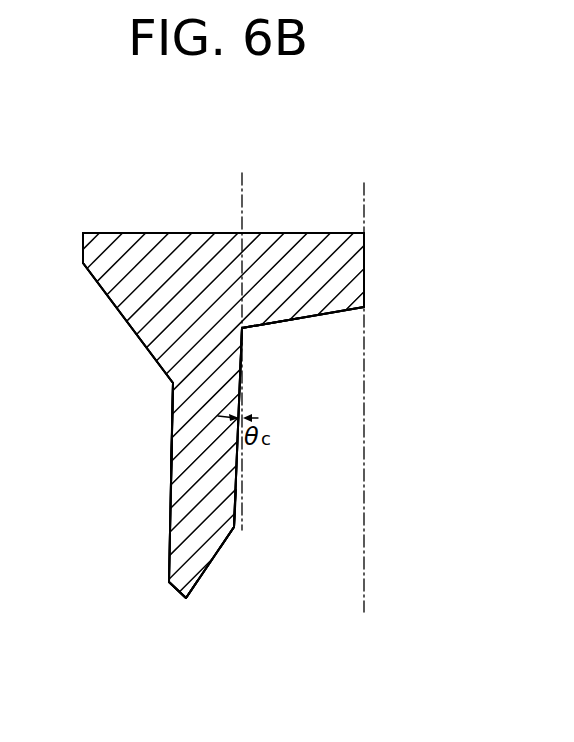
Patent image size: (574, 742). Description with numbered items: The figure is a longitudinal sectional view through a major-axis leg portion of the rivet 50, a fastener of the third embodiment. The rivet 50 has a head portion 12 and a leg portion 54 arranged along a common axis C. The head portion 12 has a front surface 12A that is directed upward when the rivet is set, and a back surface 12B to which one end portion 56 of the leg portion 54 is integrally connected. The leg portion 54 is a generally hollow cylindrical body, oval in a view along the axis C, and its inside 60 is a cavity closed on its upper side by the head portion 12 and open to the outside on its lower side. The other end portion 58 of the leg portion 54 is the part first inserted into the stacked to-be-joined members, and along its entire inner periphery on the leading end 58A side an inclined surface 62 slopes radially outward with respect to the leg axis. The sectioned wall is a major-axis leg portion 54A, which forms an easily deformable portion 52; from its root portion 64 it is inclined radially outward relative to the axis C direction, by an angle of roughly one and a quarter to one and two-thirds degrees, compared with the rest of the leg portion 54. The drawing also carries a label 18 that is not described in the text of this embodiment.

The head portion 12 is at (111, 222).
The front surface 12A is at (192, 232).
The back surface 12B is at (320, 321).
The inclined surface 18 is at (117, 308).
The rivet 50 is at (306, 172).
The easily deformable portion 52 is at (249, 533).
The leg portion 54 is at (163, 503).
The major-axis leg portion 54A is at (166, 460).
The one end portion 56 is at (172, 407).
The other end portion 58 is at (168, 577).
The leading end 58A is at (182, 590).
The inside 60 is at (298, 521).
The inclined surface 62 is at (212, 558).
The root portion 64 is at (248, 333).
The axis C is at (364, 462).